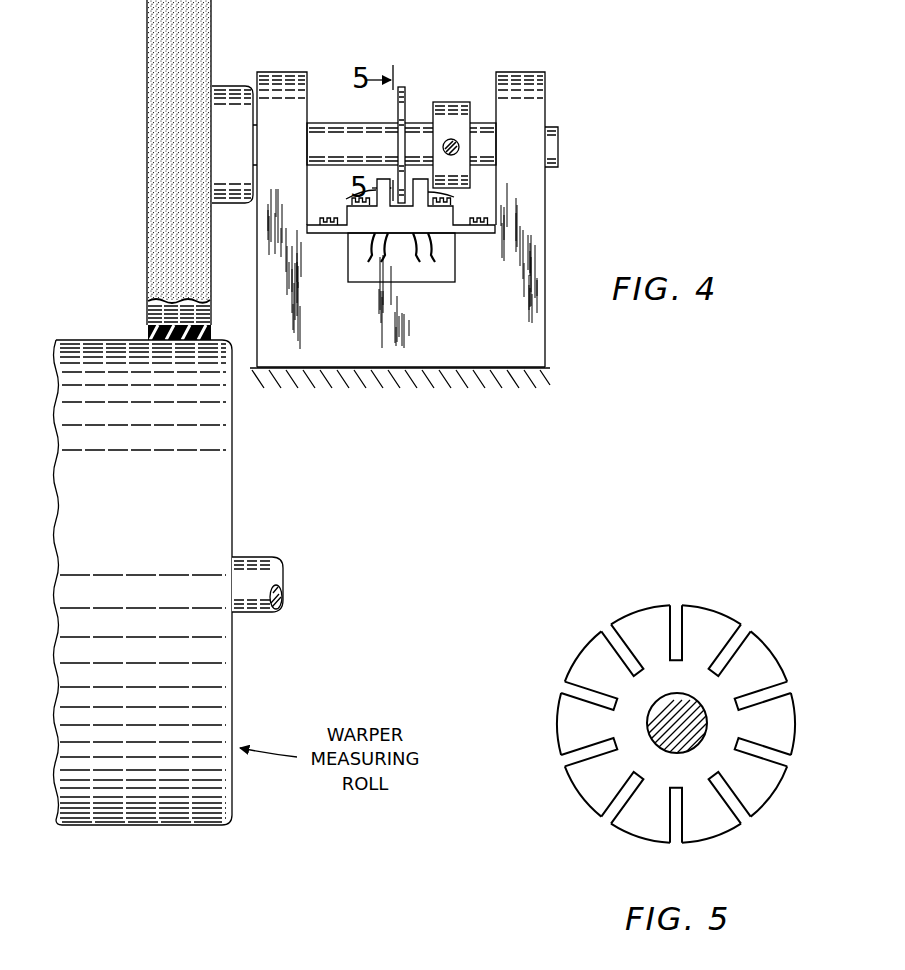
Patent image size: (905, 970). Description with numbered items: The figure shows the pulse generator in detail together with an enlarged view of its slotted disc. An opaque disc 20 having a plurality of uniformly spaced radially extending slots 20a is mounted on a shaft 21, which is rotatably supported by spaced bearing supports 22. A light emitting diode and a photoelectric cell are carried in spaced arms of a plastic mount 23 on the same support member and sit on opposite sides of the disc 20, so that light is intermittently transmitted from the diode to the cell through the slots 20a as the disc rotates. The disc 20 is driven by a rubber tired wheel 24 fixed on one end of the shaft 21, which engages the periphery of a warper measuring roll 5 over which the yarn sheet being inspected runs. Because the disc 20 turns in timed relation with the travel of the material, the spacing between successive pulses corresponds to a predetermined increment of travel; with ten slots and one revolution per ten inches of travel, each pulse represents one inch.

In FIG. 4, the measuring roll 5 is at (222, 482).
In FIG. 4, the opaque disc 20 is at (396, 107).
In FIG. 5, the opaque disc 20 is at (712, 622).
In FIG. 4, the radially extending slots 20a is at (418, 124).
In FIG. 5, the radially extending slots 20a is at (779, 691).
In FIG. 4, the shaft 21 is at (556, 143).
In FIG. 5, the shaft 21 is at (655, 734).
In FIG. 4, the bearing supports 22 is at (283, 92).
In FIG. 4, the plastic mount 23 is at (448, 217).
In FIG. 4, the rubber tired wheel 24 is at (150, 28).